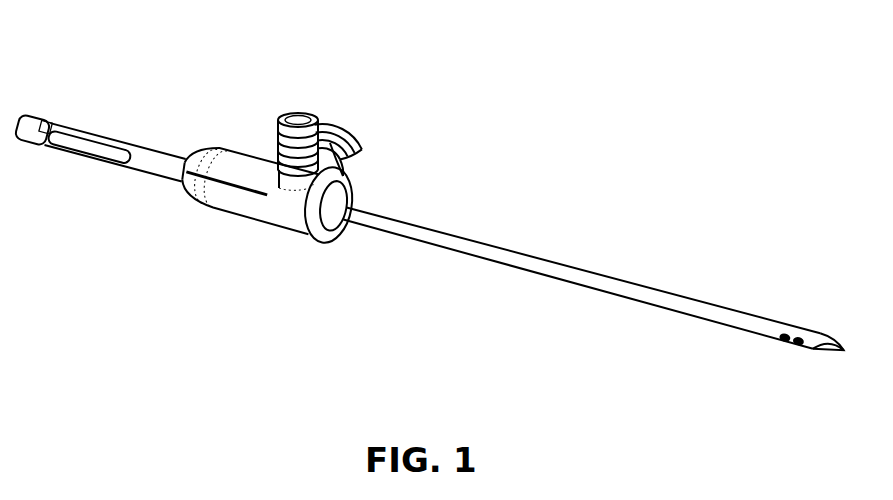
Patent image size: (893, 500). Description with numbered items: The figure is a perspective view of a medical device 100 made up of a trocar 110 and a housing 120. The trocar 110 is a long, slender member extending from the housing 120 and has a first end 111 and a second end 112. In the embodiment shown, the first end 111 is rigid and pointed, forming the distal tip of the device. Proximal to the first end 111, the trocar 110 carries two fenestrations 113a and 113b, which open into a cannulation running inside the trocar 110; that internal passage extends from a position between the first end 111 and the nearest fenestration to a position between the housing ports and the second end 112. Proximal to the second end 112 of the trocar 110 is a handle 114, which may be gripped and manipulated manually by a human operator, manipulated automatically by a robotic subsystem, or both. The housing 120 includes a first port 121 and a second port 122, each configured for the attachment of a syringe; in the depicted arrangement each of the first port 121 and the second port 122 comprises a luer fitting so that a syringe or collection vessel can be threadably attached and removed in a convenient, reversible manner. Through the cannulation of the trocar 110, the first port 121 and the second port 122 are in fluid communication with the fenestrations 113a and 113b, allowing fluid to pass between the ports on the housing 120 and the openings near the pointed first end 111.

The medical device 100 is at (134, 35).
The trocar 110 is at (599, 332).
The first end 111 is at (844, 351).
The second end 112 is at (31, 116).
The fenestration 113a is at (782, 338).
The fenestration 113b is at (798, 345).
The handle 114 is at (102, 115).
The housing 120 is at (279, 232).
The first port 121 is at (276, 135).
The second port 122 is at (356, 122).